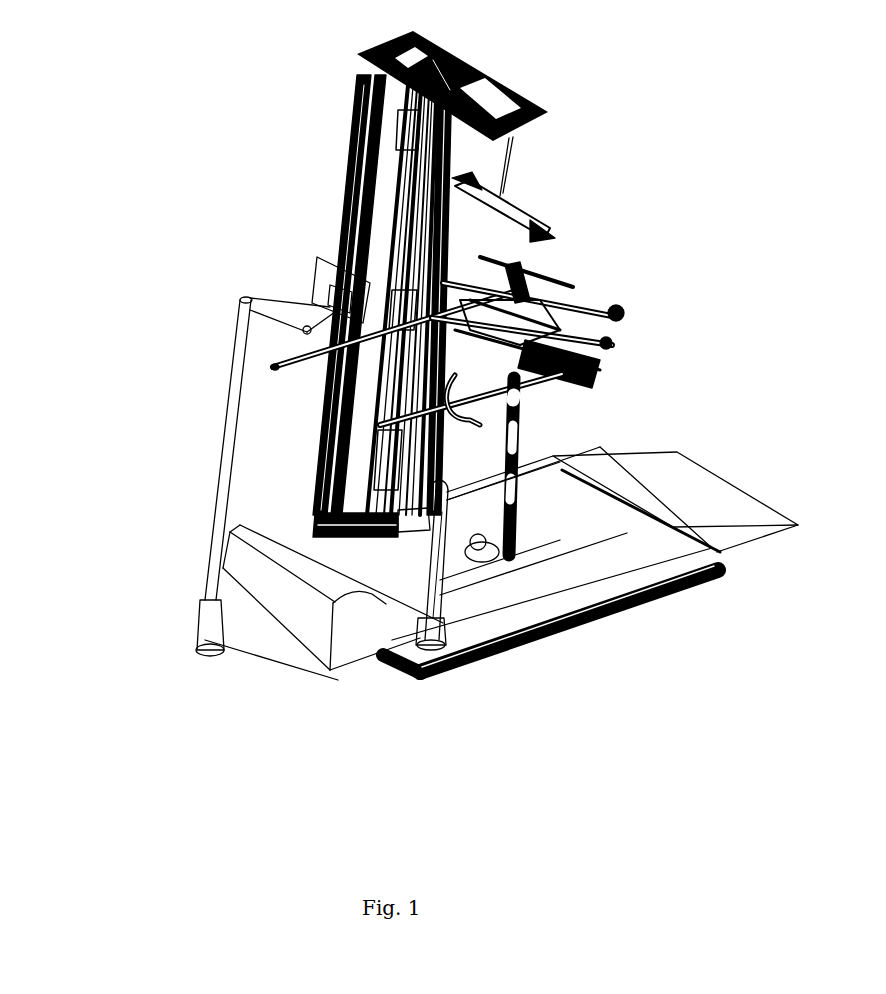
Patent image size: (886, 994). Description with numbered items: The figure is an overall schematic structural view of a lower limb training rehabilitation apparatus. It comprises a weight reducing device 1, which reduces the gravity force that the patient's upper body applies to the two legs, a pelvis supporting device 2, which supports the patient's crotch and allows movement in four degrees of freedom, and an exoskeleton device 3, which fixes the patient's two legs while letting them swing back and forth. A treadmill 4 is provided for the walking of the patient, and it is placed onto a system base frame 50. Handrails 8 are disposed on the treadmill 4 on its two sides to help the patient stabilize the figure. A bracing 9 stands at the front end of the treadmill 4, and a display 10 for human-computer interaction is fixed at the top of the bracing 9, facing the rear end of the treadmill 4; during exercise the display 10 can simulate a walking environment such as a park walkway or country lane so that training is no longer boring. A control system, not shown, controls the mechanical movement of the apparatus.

The weight reducing device 1 is at (360, 276).
The pelvis supporting device 2 is at (514, 272).
The exoskeleton device 3 is at (587, 527).
The treadmill 4 is at (622, 441).
The handrails 8 is at (346, 603).
The bracing 9 is at (184, 471).
The display 10 is at (237, 214).
The system base frame 50 is at (470, 639).